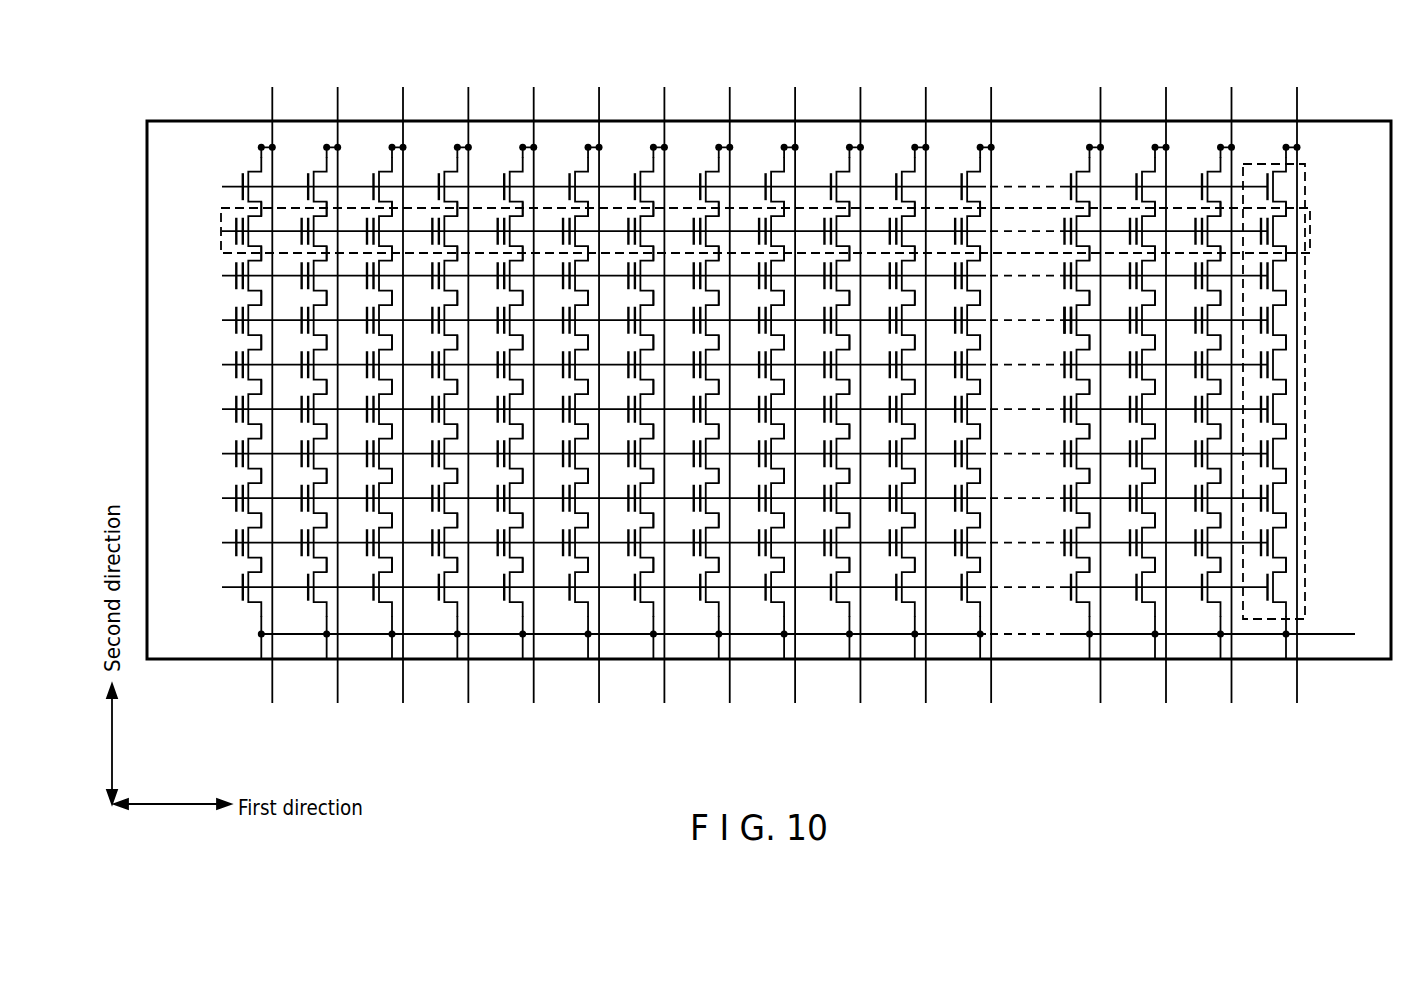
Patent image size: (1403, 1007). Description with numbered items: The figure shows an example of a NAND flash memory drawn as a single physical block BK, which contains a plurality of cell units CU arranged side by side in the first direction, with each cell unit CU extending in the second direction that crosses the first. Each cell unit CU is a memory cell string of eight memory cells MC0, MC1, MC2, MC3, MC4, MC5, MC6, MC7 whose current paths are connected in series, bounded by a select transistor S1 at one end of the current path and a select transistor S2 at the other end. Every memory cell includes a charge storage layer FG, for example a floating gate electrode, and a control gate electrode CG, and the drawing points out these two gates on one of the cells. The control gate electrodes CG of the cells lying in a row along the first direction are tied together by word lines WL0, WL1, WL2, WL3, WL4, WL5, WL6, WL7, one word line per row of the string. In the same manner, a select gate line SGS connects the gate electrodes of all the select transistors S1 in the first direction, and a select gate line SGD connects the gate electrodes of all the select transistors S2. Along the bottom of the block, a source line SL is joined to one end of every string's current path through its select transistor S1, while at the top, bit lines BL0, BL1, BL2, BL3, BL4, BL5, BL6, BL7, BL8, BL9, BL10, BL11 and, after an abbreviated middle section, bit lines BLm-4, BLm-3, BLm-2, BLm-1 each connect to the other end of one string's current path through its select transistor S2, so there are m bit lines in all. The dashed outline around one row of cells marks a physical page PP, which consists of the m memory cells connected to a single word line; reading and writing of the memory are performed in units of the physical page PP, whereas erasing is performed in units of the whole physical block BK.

The physical block BK is at (1047, 121).
The physical page PP is at (548, 208).
The cell unit CU is at (1308, 170).
The select transistor S1 is at (1278, 588).
The select transistor S2 is at (1278, 187).
The memory cell MC0 is at (1278, 543).
The memory cell MC1 is at (1278, 499).
The memory cell MC2 is at (1278, 454).
The memory cell MC3 is at (1278, 410).
The memory cell MC4 is at (1278, 365).
The memory cell MC5 is at (1278, 321).
The memory cell MC6 is at (1278, 276).
The memory cell MC7 is at (1278, 232).
The control gate electrode CG is at (1067, 323).
The charge storage layer FG is at (1068, 335).
The source line SL is at (1322, 637).
The select gate line SGD is at (720, 187).
The select gate line SGS is at (720, 587).
The word line WL0 is at (720, 543).
The word line WL1 is at (720, 498).
The word line WL2 is at (720, 454).
The word line WL3 is at (720, 409).
The word line WL4 is at (720, 365).
The word line WL5 is at (720, 320).
The word line WL6 is at (720, 276).
The word line WL7 is at (720, 231).
The bit line BL0 is at (272, 378).
The bit line BL1 is at (338, 378).
The bit line BL2 is at (403, 378).
The bit line BL3 is at (468, 378).
The bit line BL4 is at (534, 378).
The bit line BL5 is at (599, 378).
The bit line BL6 is at (664, 378).
The bit line BL7 is at (730, 378).
The bit line BL8 is at (795, 378).
The bit line BL9 is at (860, 378).
The bit line BL10 is at (926, 378).
The bit line BL11 is at (991, 378).
The bit line BLm-4 is at (1102, 378).
The bit line BLm-3 is at (1168, 378).
The bit line BLm-2 is at (1236, 378).
The bit line BLm-1 is at (1306, 378).